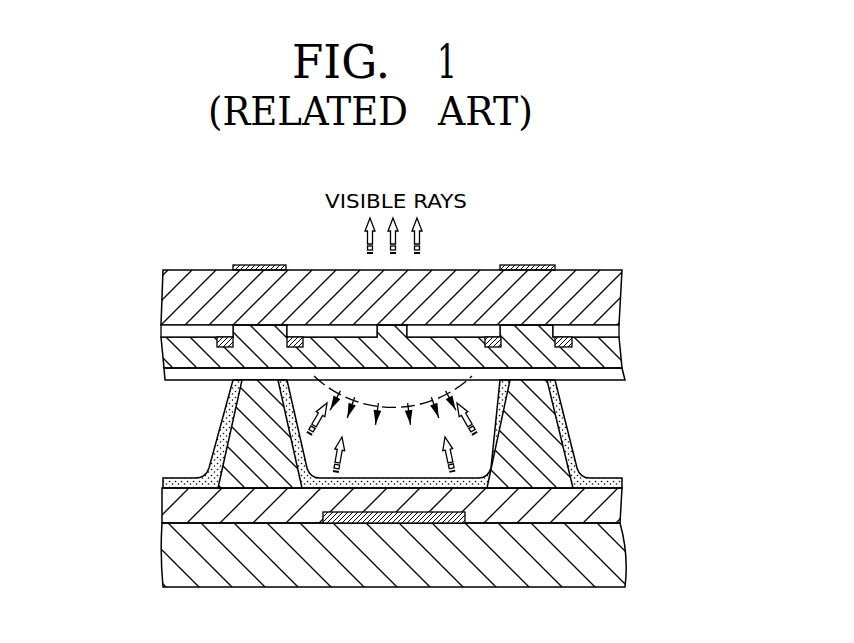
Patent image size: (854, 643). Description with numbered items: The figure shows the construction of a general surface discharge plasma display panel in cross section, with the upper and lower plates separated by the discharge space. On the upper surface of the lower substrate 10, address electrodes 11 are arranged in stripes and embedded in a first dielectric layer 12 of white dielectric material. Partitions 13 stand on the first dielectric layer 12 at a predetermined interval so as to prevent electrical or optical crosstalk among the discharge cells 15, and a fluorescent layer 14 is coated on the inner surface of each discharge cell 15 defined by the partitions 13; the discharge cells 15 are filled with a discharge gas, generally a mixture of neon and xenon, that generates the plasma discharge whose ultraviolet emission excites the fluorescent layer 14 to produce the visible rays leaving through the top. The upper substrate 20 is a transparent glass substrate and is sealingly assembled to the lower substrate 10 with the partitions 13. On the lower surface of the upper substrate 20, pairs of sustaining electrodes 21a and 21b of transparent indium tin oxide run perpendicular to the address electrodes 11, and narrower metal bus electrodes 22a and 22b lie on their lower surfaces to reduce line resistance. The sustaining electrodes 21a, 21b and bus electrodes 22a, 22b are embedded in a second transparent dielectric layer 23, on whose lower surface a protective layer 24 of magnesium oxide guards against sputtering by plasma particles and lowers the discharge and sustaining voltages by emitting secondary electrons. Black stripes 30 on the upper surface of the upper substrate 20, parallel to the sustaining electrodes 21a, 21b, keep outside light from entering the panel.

The lower substrate 10 is at (612, 558).
The address electrodes 11 is at (367, 523).
The first dielectric layer 12 is at (610, 505).
The partitions 13 is at (545, 462).
The fluorescent layer 14 is at (565, 426).
The discharge cells 15 is at (392, 424).
The upper substrate 20 is at (607, 293).
The sustaining electrode 21a is at (336, 332).
The sustaining electrode 21b is at (450, 332).
The bus electrode 22a is at (292, 337).
The bus electrode 22b is at (493, 337).
The second dielectric layer 23 is at (622, 350).
The protective layer 24 is at (623, 375).
The black stripes 30 is at (238, 266).